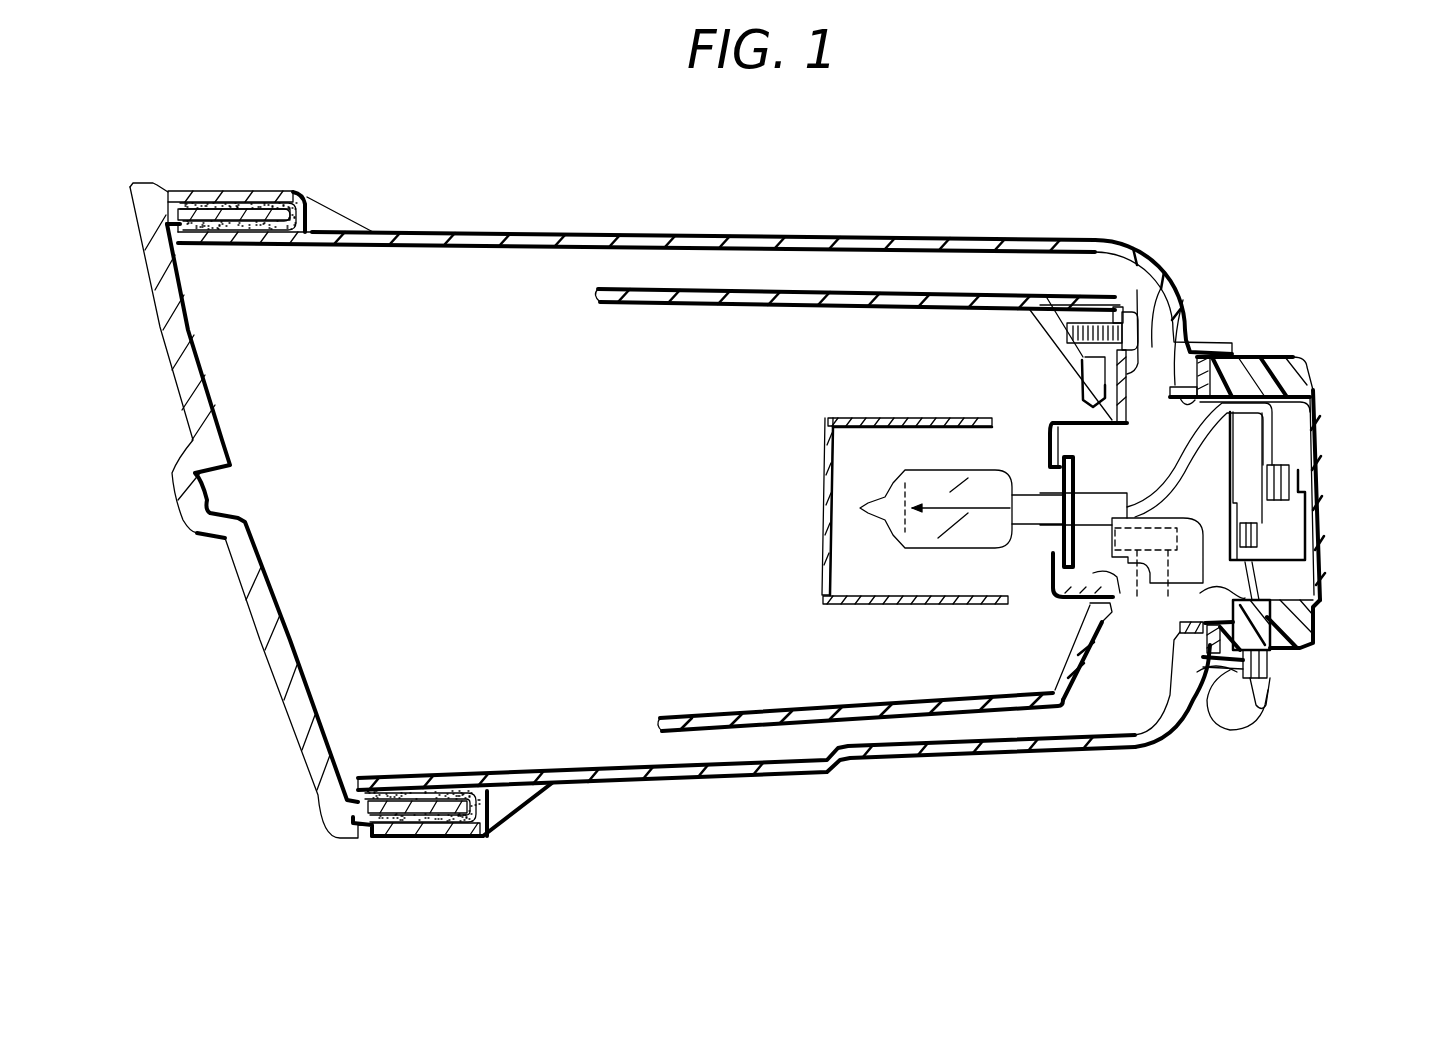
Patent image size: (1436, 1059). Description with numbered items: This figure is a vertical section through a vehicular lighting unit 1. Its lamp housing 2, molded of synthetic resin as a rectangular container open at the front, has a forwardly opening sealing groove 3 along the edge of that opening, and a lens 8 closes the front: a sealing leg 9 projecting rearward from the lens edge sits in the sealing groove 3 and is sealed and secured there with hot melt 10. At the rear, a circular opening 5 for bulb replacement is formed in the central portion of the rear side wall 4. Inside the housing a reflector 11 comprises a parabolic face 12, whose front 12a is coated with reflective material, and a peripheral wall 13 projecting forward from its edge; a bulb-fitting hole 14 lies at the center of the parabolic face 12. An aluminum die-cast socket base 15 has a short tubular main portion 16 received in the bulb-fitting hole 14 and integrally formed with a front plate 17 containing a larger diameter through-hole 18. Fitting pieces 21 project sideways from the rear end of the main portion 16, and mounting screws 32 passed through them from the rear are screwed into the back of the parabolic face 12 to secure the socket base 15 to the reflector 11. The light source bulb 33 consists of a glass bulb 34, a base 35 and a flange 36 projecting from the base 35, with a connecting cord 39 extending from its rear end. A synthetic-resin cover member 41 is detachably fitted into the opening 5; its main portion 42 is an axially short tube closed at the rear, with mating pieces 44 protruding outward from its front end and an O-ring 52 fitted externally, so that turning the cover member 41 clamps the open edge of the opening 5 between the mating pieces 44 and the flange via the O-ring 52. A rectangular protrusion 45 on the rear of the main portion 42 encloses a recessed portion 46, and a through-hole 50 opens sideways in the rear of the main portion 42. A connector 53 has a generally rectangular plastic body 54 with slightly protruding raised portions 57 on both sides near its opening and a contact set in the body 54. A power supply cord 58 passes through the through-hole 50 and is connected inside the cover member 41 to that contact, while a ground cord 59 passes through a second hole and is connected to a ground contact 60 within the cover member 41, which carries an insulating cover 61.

The vehicle lamp 1 is at (900, 192).
The lamp housing 2 is at (628, 232).
The sealing groove 3 is at (270, 205).
The rear side wall 4 is at (1180, 303).
The circular opening 5 is at (1233, 385).
The lens 8 is at (262, 643).
The sealing leg 9 is at (212, 205).
The hot melt 10 is at (298, 225).
The reflector 11 is at (745, 728).
The parabolic face 12 is at (1083, 657).
The front of the parabolic face 12a is at (1047, 350).
The peripheral wall 13 is at (757, 292).
The bulb-fitting hole 14 is at (1053, 458).
The socket base 15 is at (1050, 562).
The main portion 16 is at (1120, 592).
The front plate 17 is at (1047, 473).
The larger diameter through-hole 18 is at (1053, 473).
The fitting pieces 21 is at (1152, 342).
The mounting screws 32 is at (1137, 320).
The light source bulb 33 is at (897, 483).
The glass bulb 34 is at (927, 547).
The base 35 is at (1107, 497).
The flange 36 is at (1067, 533).
The connecting cord 39 is at (1180, 455).
The cover member 41 is at (1325, 453).
The main portion 42 is at (1317, 650).
The mating pieces 44 is at (1162, 727).
The protrusion 45 is at (1330, 565).
The recessed portion 46 is at (1297, 420).
The through-hole 50 is at (1265, 720).
The O-ring 52 is at (1180, 360).
The connector 53 is at (1297, 503).
The body 54 is at (1297, 538).
The raised portions 57 is at (1283, 483).
The power supply cord 58 is at (1273, 667).
The ground cord 59 is at (1213, 732).
The ground contact 60 is at (1128, 573).
The insulating cover 61 is at (1188, 513).